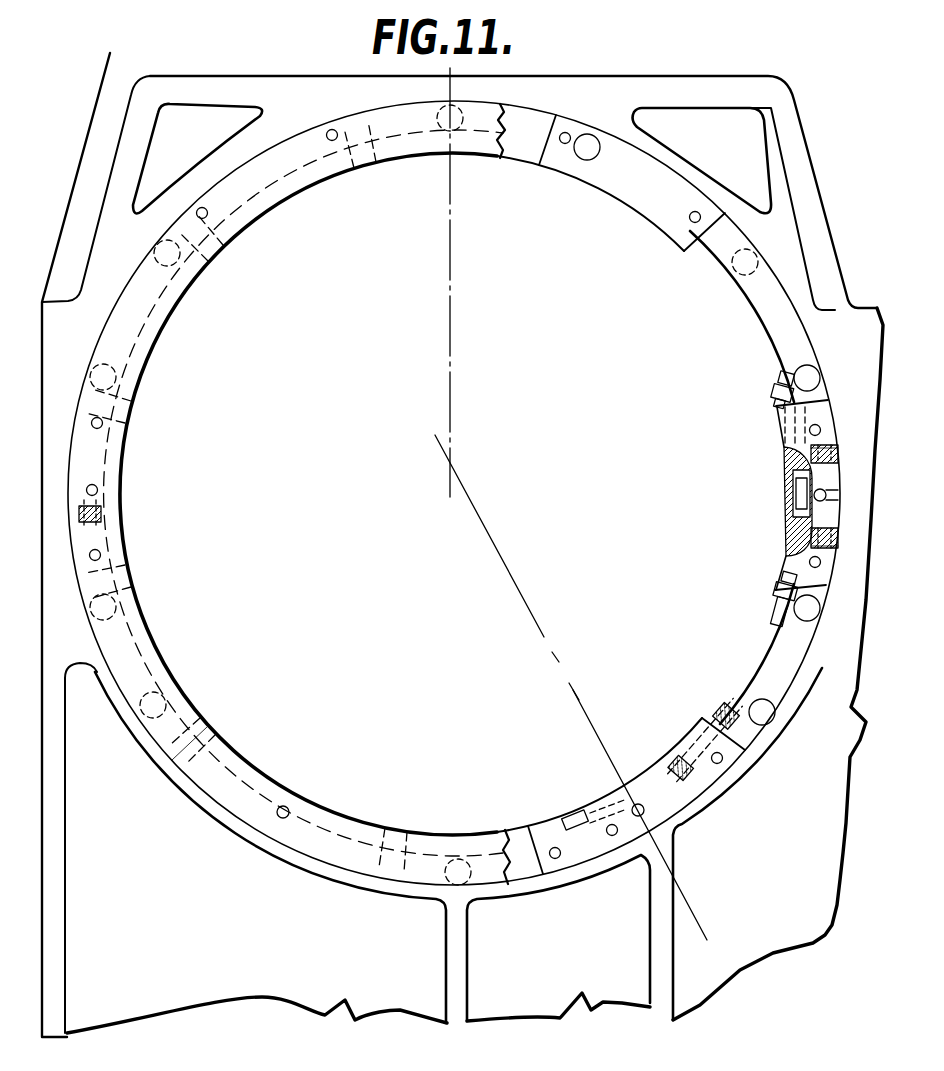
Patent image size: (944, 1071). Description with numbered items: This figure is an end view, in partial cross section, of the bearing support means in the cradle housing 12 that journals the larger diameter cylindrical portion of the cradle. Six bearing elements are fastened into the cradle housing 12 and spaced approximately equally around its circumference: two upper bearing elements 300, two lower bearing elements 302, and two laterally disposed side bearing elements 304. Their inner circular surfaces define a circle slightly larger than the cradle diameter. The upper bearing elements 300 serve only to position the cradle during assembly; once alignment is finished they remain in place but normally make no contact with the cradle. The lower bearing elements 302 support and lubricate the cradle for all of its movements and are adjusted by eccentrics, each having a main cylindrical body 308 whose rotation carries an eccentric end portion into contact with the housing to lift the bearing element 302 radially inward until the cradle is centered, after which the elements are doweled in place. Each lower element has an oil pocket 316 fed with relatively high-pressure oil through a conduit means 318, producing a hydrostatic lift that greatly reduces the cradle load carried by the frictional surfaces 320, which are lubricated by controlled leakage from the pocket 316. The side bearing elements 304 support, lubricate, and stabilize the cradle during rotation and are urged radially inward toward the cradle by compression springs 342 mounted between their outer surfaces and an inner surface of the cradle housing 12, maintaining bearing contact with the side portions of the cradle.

The cradle housing 12 is at (423, 88).
The upper bearing element 300 is at (266, 222).
The lower bearing element 302 is at (305, 790).
The side bearing element 304 is at (132, 511).
The main cylindrical body 308 is at (290, 810).
The oil pocket 316 is at (575, 808).
The conduit means 318 is at (735, 705).
The frictional surfaces 320 is at (222, 735).
The compression springs 342 is at (839, 442).